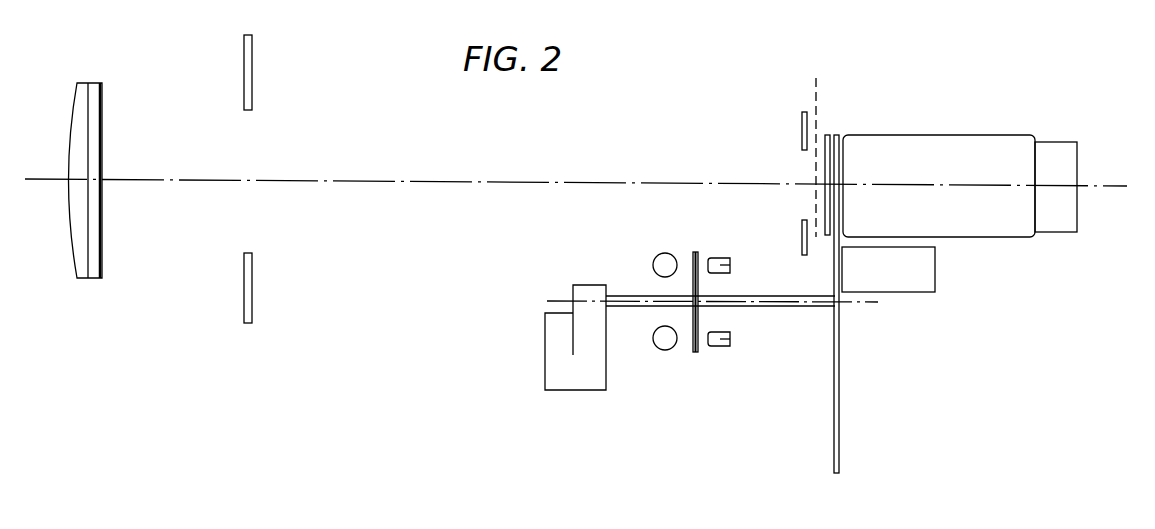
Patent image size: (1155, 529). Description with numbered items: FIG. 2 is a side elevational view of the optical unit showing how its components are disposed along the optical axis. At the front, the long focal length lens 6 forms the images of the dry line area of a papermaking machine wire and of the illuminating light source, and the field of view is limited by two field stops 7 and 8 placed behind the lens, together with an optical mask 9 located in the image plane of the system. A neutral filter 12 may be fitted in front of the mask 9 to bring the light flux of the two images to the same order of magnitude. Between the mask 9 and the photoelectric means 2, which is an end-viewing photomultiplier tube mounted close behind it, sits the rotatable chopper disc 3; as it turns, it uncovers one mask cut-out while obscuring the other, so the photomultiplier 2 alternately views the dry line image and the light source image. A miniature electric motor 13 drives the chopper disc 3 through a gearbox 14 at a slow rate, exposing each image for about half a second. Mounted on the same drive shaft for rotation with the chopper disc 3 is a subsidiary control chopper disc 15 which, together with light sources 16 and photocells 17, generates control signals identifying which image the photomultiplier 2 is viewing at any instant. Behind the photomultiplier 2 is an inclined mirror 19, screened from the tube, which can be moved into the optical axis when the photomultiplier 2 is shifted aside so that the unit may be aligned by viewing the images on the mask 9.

The photoelectric means 2 is at (1005, 142).
The chopper disc 3 is at (840, 437).
The lens 6 is at (97, 280).
The field stop 7 is at (252, 307).
The field stop 8 is at (802, 123).
The optical mask 9 is at (826, 237).
The neutral filter 12 is at (815, 82).
The miniature electric motor 13 is at (550, 373).
The gearbox 14 is at (588, 292).
The subsidiary control chopper disc 15 is at (698, 252).
The light sources 16 is at (669, 256).
The photocells 17 is at (730, 265).
The inclined mirror 19 is at (925, 287).